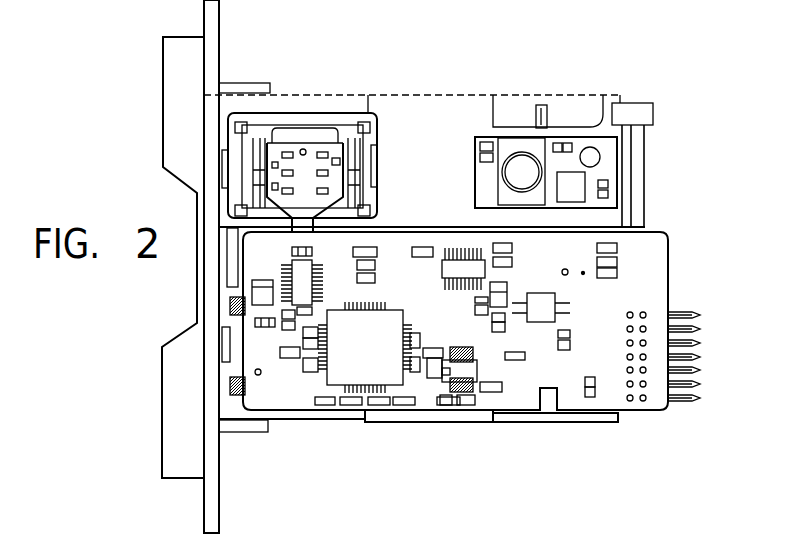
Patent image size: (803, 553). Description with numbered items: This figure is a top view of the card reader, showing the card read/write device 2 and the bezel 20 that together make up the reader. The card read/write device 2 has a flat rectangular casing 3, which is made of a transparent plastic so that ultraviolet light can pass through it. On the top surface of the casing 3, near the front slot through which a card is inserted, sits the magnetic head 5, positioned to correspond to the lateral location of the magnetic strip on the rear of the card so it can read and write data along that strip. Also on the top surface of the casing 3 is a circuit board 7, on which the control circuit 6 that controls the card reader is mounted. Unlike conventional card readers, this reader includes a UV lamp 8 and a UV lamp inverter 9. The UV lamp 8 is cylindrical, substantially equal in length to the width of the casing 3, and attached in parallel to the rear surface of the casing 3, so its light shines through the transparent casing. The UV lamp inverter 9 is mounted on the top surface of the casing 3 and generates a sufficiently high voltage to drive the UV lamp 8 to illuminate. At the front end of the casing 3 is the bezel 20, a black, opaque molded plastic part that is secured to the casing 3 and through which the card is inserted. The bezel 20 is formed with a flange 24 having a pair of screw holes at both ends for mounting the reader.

The card read/write device 2 is at (473, 440).
The casing 3 is at (422, 93).
The magnetic head 5 is at (303, 172).
The control circuit 6 is at (617, 340).
The circuit board 7 is at (653, 270).
The UV lamp 8 is at (645, 183).
The UV lamp inverter 9 is at (612, 127).
The bezel 20 is at (127, 351).
The flange 24 is at (203, 504).